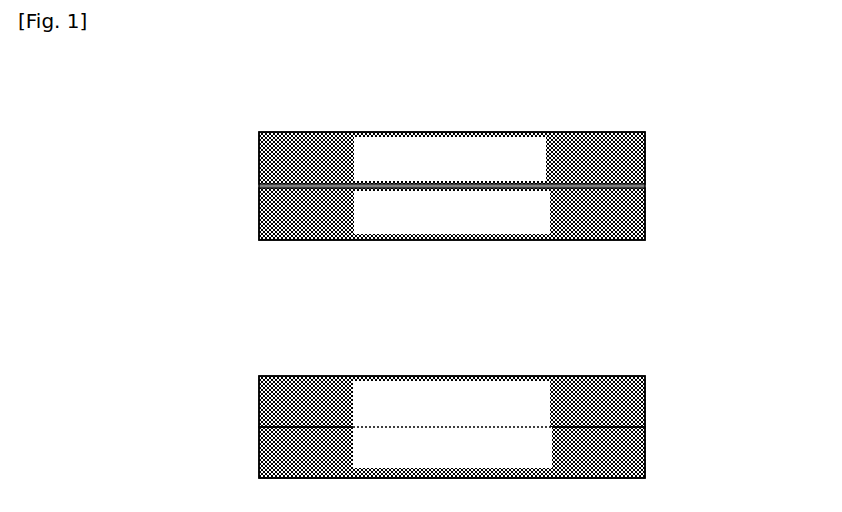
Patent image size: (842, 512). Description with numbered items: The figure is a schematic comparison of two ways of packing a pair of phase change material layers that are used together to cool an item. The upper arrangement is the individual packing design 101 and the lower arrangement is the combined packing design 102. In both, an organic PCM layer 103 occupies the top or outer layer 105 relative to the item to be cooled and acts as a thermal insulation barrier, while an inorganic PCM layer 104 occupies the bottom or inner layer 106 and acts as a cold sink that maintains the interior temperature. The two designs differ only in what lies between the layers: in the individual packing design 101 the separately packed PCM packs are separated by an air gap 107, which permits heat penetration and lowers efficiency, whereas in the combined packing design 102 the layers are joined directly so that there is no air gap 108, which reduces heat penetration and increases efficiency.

The individual packing design 101 is at (408, 157).
The combined packing design 102 is at (408, 402).
The organic PCM layer 103 is at (451, 282).
The inorganic PCM layer 104 is at (452, 329).
The top or outer layer 105 is at (646, 157).
The bottom or inner layer 106 is at (646, 207).
The air gap 107 is at (253, 185).
The no air gap 108 is at (275, 427).